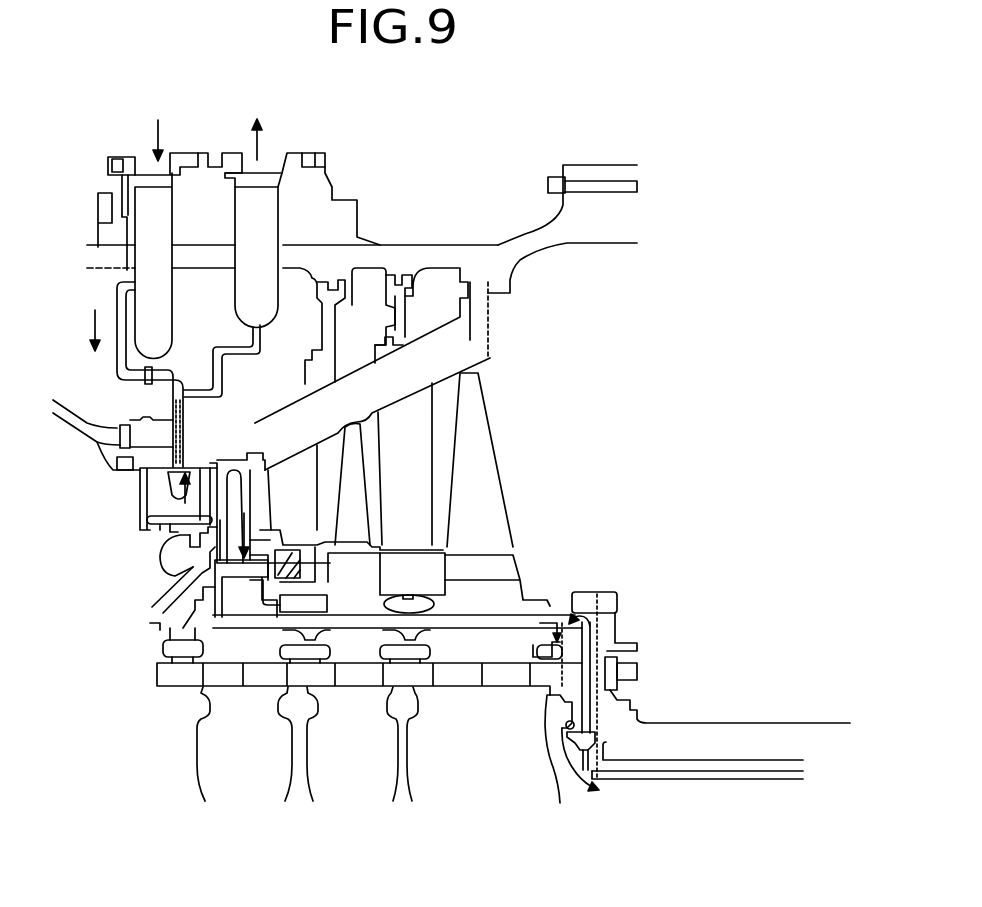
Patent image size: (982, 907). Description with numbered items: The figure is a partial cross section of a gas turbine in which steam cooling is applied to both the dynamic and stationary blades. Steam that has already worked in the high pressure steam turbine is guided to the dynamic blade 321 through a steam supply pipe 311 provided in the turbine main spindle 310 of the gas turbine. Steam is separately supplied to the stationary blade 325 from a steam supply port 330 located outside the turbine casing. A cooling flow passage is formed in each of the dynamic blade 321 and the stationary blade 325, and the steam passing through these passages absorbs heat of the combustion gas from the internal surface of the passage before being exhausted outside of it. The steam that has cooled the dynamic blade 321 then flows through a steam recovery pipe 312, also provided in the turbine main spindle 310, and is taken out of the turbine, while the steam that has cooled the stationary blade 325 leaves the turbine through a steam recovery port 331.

The turbine main spindle 310 is at (708, 712).
The steam supply pipe 311 is at (704, 762).
The steam recovery pipe 312 is at (703, 785).
The dynamic blade 321 is at (230, 496).
The stationary blade 325 is at (150, 506).
The steam supply port 330 is at (142, 154).
The steam recovery port 331 is at (272, 150).